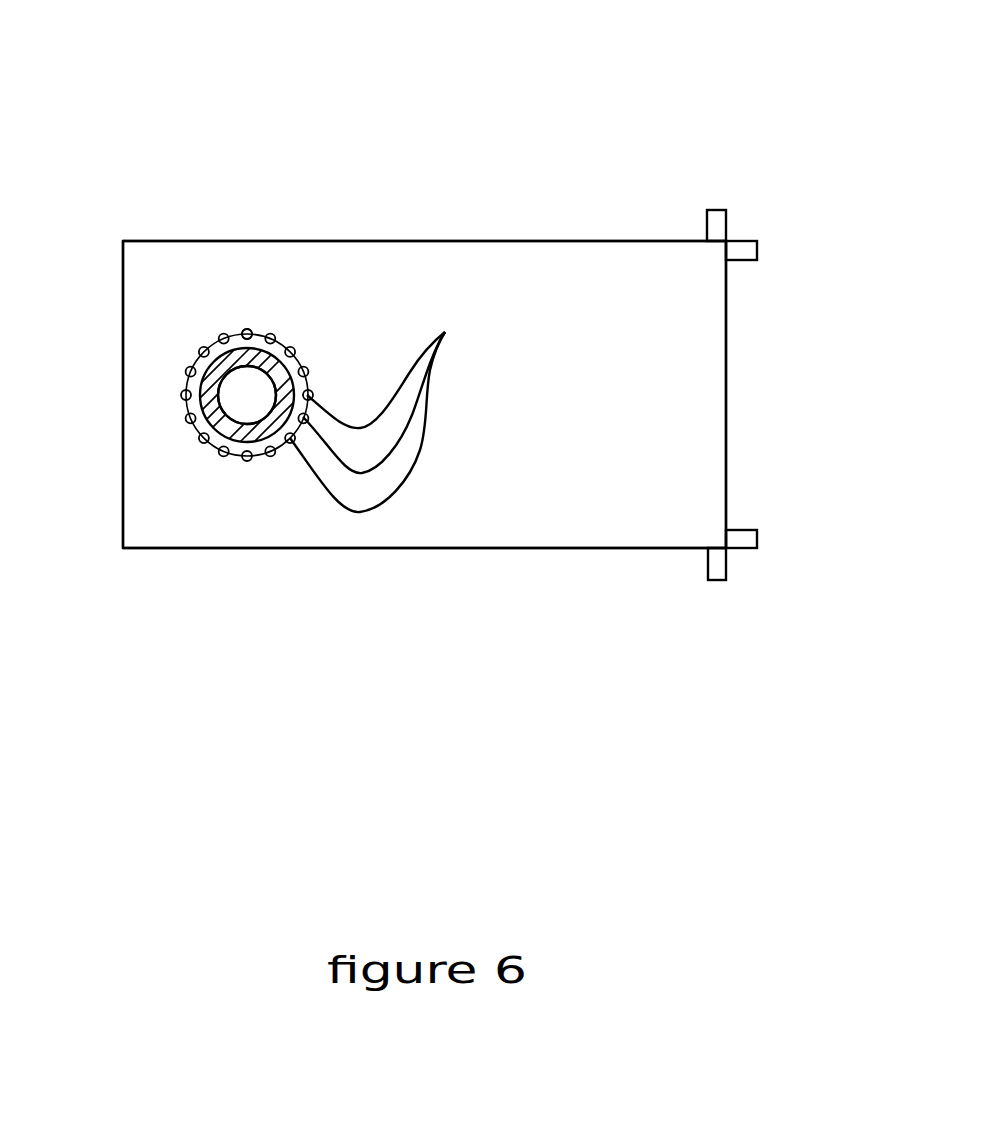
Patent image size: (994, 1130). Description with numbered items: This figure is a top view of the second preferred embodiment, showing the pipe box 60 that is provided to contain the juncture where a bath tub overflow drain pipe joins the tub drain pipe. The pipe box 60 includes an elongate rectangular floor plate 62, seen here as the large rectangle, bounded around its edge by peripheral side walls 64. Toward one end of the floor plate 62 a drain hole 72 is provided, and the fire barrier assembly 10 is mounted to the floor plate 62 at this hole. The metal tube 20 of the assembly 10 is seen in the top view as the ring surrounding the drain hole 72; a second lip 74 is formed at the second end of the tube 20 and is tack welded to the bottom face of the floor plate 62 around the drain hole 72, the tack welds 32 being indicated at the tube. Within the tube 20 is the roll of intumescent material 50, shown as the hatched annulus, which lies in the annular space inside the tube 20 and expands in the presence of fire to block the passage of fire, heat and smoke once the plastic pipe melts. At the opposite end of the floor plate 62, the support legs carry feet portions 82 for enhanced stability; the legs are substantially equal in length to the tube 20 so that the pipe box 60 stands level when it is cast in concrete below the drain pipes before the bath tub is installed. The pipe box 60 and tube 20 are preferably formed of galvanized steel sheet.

The assembly 10 is at (524, 110).
The metal tube 20 is at (215, 442).
The tack welds 32 is at (390, 414).
The intumescent material 50 is at (222, 367).
The pipe box 60 is at (153, 112).
The floor plate 62 is at (472, 412).
The side walls 64 is at (600, 241).
The drain hole 72 is at (262, 386).
The second lip 74 is at (240, 340).
The feet portions 82 is at (716, 225).